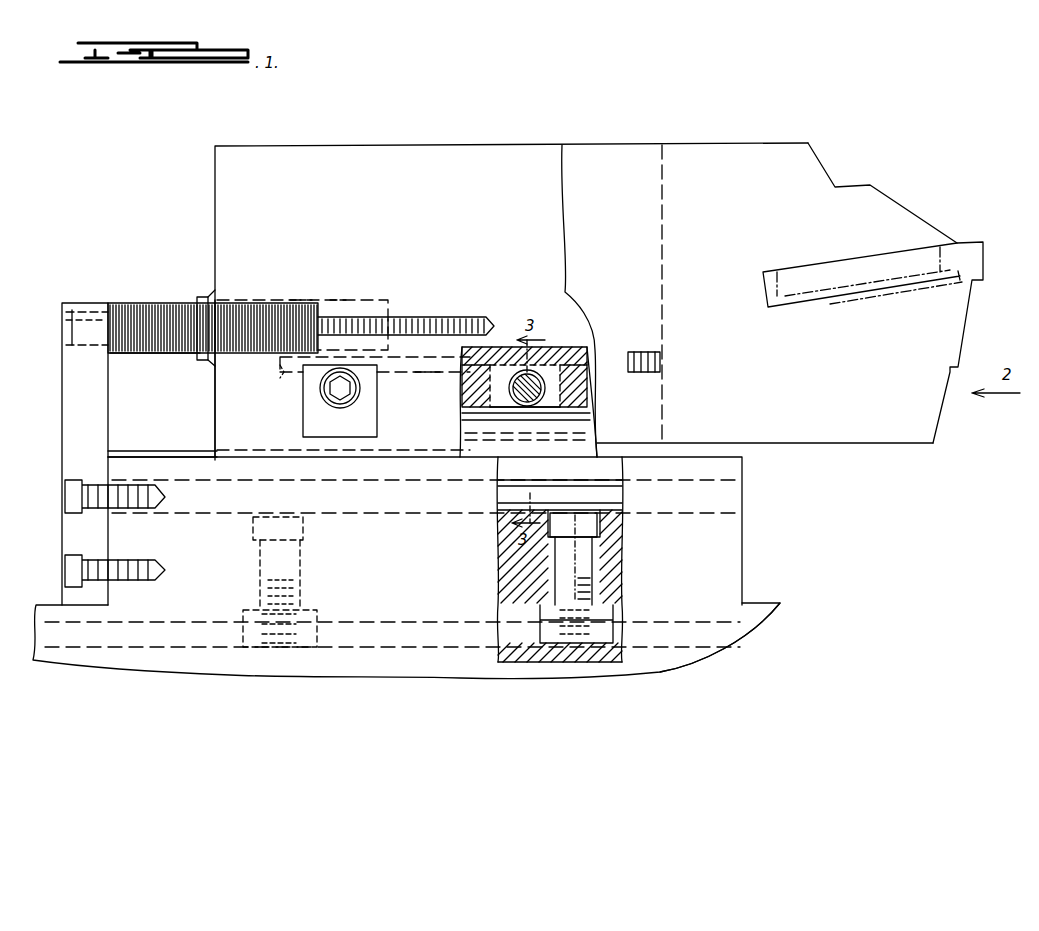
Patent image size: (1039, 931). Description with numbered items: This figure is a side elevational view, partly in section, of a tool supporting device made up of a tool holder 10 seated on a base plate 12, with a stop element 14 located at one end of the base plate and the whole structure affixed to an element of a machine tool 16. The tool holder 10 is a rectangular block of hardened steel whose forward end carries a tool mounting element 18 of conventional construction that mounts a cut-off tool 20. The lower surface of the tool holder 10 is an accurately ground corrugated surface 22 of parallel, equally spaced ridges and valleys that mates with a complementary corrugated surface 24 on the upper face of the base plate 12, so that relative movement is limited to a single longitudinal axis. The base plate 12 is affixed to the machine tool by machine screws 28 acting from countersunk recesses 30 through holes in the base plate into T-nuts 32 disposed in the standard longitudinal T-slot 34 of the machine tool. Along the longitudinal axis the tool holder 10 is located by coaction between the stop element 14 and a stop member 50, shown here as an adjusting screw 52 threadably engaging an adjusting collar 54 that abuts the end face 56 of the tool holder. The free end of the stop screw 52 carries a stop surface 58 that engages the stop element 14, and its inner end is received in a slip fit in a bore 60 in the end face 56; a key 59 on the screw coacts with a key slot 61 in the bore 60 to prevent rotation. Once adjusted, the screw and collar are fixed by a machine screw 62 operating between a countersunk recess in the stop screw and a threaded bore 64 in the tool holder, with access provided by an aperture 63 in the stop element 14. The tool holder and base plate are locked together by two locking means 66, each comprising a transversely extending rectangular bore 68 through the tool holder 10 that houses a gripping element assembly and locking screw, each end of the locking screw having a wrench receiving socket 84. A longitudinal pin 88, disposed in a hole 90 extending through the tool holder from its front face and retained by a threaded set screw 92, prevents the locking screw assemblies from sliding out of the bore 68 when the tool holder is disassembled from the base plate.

The tool holder 10 is at (497, 149).
The base plate 12 is at (740, 525).
The stop element 14 is at (65, 357).
The machine tool element 16 is at (374, 672).
The tool mounting element 18 is at (782, 153).
The cut-off tool 20 is at (978, 262).
The corrugated surface 22 is at (250, 460).
The complementary corrugated surface 24 is at (148, 450).
The machine screws 28 is at (592, 550).
The countersunk recesses 30 is at (597, 525).
The T-nuts 32 is at (550, 640).
The T-slot 34 is at (740, 632).
The stop member 50 is at (194, 288).
The adjusting screw 52 is at (128, 302).
The adjusting collar 54 is at (203, 362).
The end face 56 is at (215, 408).
The stop surface 58 is at (108, 320).
The key 59 is at (297, 300).
The bore 60 is at (372, 300).
The key slot 61 is at (337, 300).
The machine screw 62 is at (128, 355).
The aperture 63 is at (72, 310).
The threaded bore 64 is at (453, 318).
The locking means 66 is at (296, 425).
The rectangular bore 68 is at (462, 400).
The wrench receiving socket 84 is at (346, 392).
The pin 88 is at (284, 374).
The hole 90 is at (424, 373).
The set screw 92 is at (664, 358).